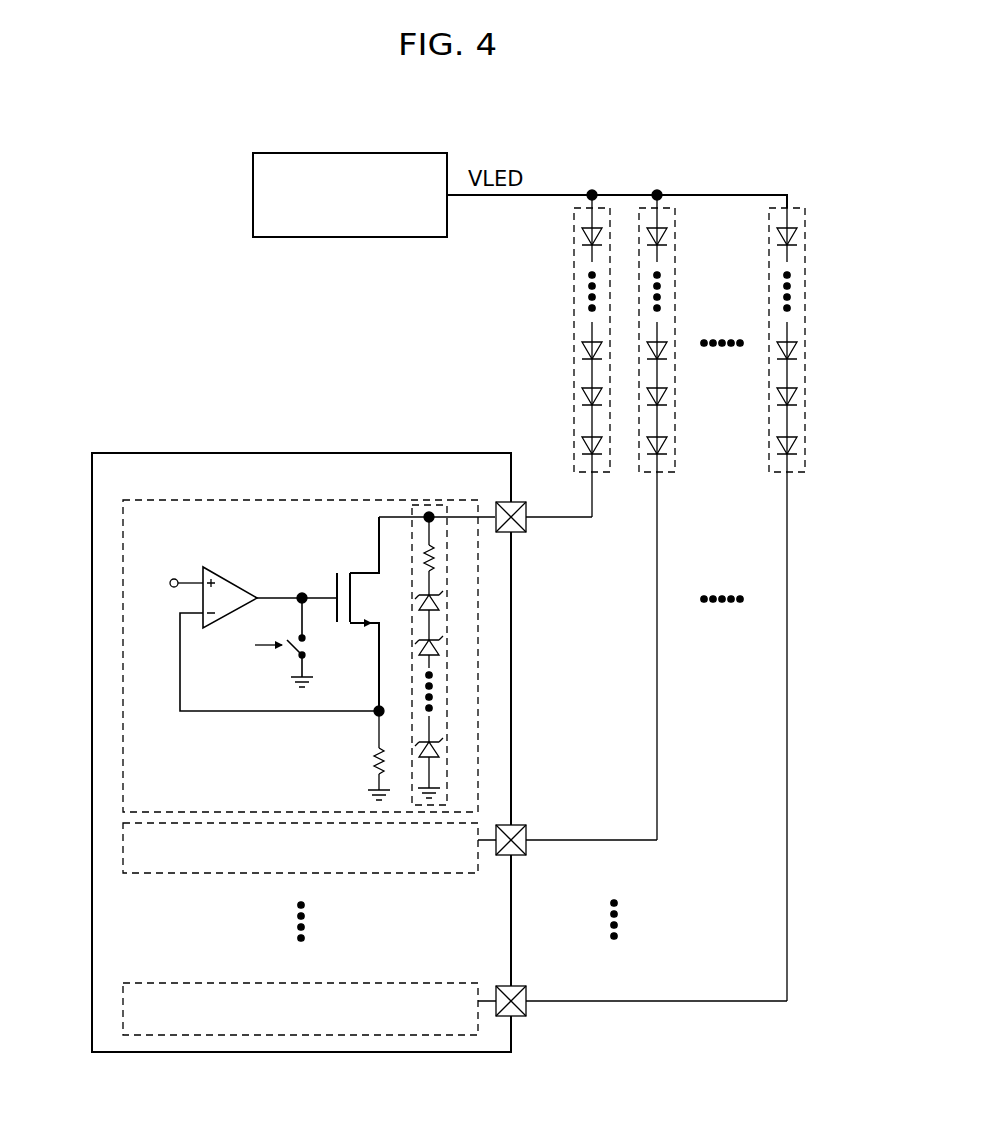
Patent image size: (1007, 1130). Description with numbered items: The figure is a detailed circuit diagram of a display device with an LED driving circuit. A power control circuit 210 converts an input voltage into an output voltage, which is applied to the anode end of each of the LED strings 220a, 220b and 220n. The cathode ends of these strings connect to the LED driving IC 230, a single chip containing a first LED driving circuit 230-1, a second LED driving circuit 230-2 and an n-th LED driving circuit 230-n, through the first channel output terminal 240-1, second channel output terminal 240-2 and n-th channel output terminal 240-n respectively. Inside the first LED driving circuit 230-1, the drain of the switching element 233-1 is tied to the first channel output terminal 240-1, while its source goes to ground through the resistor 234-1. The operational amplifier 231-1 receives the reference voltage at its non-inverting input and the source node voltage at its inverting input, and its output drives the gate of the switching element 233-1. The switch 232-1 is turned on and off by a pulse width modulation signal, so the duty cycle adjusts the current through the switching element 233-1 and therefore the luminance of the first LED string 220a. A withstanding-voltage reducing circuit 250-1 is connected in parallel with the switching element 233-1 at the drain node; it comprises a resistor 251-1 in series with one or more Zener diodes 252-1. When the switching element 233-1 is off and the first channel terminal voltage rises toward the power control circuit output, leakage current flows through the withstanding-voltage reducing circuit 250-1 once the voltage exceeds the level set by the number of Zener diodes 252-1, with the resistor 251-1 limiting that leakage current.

The power control circuit 210 is at (348, 153).
The first LED string 220a is at (574, 232).
The second LED string 220b is at (675, 215).
The n-th LED string 220n is at (806, 232).
The LED driving IC 230 is at (298, 452).
The first LED driving circuit 230-1 is at (123, 632).
The second LED driving circuit 230-2 is at (123, 848).
The n-th LED driving circuit 230-n is at (123, 1010).
The operational amplifier 231-1 is at (200, 580).
The switch 232-1 is at (290, 650).
The switching element 233-1 is at (360, 630).
The resistor RS1 234-1 is at (373, 752).
The first channel output terminal 240-1 is at (500, 503).
The second channel output terminal 240-2 is at (518, 857).
The n-th channel output terminal 240-n is at (518, 1018).
The withstanding-voltage reducing circuit 250-1 is at (483, 597).
The resistor 251-1 is at (433, 562).
The Zener diode 252-1 is at (433, 642).